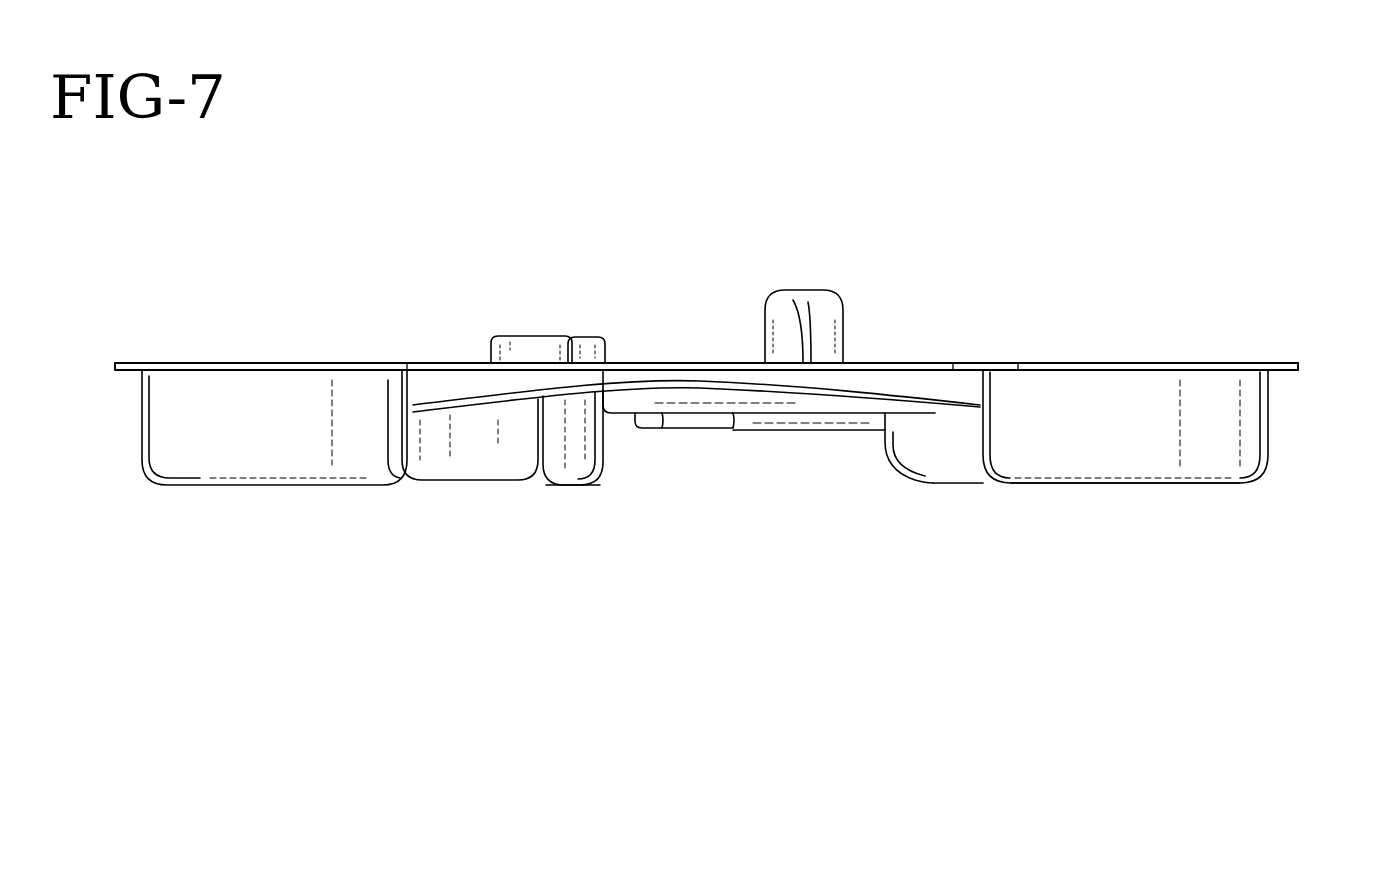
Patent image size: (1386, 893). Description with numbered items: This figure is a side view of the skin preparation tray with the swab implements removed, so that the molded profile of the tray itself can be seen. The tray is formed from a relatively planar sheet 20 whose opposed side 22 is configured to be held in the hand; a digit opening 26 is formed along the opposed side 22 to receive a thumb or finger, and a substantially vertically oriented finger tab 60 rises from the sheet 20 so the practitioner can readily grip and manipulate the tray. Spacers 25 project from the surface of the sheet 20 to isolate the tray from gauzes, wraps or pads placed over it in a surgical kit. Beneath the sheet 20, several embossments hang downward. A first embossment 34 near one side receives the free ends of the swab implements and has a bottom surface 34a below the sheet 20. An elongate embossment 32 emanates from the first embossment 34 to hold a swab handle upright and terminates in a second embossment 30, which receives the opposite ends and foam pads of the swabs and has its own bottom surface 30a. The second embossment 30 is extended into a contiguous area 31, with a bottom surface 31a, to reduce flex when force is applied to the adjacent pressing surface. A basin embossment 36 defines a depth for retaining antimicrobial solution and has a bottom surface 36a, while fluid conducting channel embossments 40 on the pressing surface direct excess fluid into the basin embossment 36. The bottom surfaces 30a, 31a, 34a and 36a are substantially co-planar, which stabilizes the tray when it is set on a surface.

The planar sheet 20 is at (255, 362).
The opposed side 22 is at (1190, 362).
The spacers 25 is at (584, 338).
The digit opening 26 is at (953, 363).
The second embossment 30 is at (443, 458).
The bottom surface 30a is at (256, 487).
The contiguous area 31 is at (586, 457).
The bottom surface 31a is at (552, 486).
The elongate embossment 32 is at (677, 402).
The first embossment 34 is at (1235, 442).
The bottom surface 34a is at (1142, 484).
The basin embossment 36 is at (927, 460).
The bottom surface 36a is at (958, 484).
The fluid conducting channel embossments 40 is at (773, 430).
The finger tab 60 is at (815, 307).